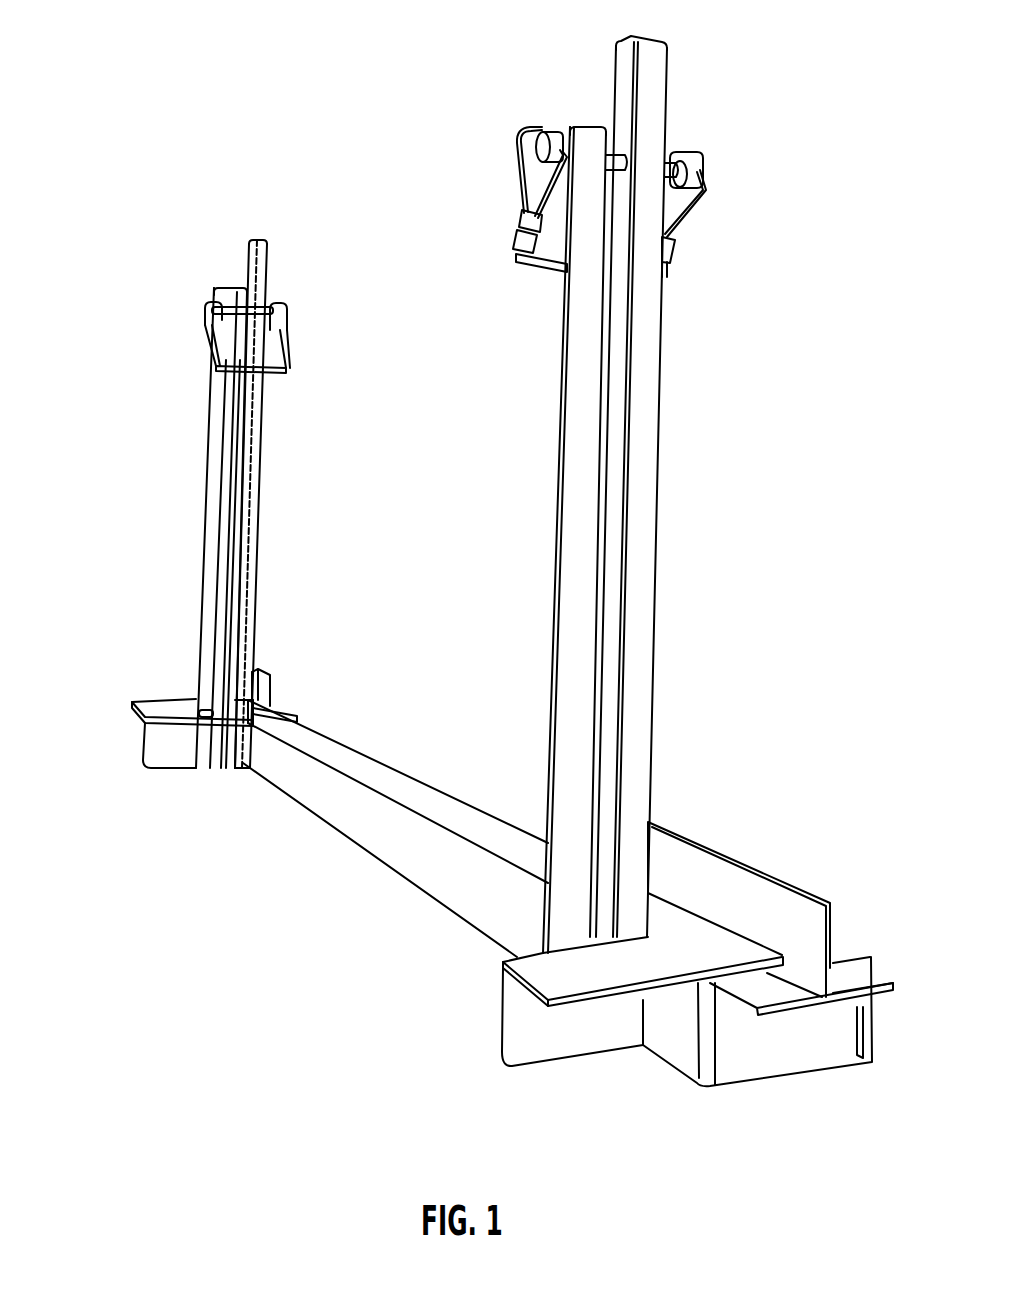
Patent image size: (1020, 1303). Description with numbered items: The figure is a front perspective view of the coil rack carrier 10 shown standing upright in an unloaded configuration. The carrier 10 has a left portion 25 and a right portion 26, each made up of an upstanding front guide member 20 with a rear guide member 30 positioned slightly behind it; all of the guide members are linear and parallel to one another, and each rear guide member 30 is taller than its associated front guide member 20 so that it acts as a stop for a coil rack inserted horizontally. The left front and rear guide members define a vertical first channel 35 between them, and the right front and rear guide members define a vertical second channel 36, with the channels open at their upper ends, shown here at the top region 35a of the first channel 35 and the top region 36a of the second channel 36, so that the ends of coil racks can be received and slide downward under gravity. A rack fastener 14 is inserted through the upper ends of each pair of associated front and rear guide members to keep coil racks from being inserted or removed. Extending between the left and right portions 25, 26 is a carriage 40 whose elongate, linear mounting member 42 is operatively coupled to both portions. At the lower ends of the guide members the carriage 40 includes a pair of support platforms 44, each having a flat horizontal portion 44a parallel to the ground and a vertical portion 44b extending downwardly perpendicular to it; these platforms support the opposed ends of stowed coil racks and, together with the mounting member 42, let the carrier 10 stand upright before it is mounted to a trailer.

The coil rack carrier 10 is at (474, 561).
The rack fastener 14 is at (455, 250).
The front guide member 20 is at (395, 540).
The left portion 25 is at (203, 502).
The right portion 26 is at (657, 509).
The rear guide member 30 is at (480, 486).
The first channel 35 is at (265, 528).
The top of sliding post 35a is at (203, 266).
The second channel 36 is at (553, 532).
The top of sliding post 36a is at (568, 108).
The carriage 40 is at (474, 864).
The mounting member 42 is at (395, 828).
The support platform 44 is at (474, 870).
The horizontal portion 44a is at (493, 835).
The vertical portion 44b is at (497, 904).